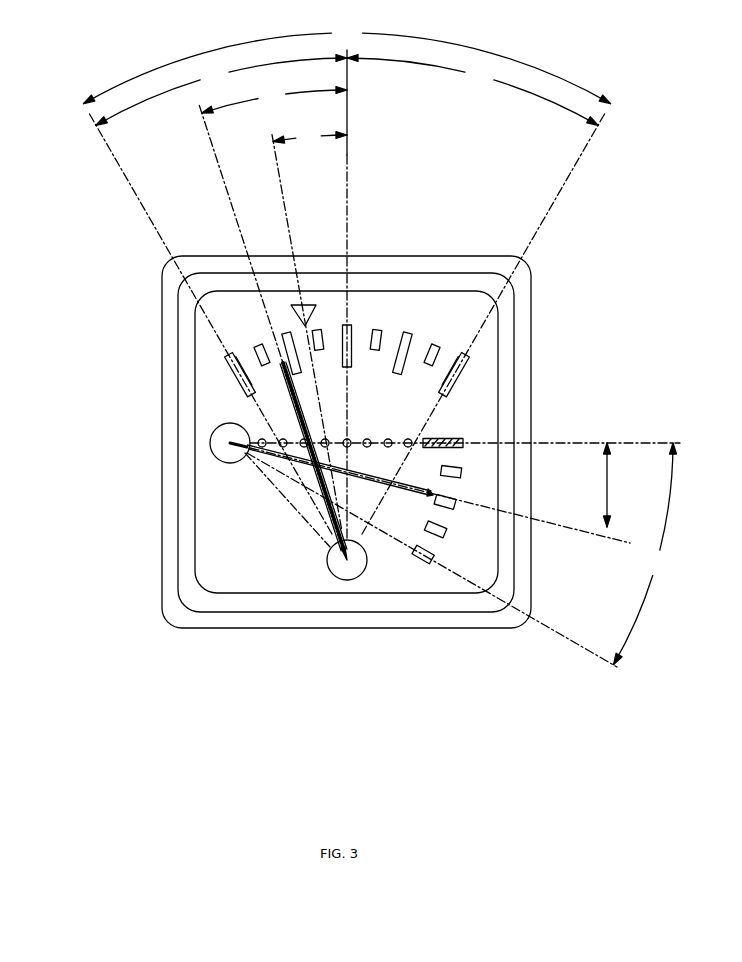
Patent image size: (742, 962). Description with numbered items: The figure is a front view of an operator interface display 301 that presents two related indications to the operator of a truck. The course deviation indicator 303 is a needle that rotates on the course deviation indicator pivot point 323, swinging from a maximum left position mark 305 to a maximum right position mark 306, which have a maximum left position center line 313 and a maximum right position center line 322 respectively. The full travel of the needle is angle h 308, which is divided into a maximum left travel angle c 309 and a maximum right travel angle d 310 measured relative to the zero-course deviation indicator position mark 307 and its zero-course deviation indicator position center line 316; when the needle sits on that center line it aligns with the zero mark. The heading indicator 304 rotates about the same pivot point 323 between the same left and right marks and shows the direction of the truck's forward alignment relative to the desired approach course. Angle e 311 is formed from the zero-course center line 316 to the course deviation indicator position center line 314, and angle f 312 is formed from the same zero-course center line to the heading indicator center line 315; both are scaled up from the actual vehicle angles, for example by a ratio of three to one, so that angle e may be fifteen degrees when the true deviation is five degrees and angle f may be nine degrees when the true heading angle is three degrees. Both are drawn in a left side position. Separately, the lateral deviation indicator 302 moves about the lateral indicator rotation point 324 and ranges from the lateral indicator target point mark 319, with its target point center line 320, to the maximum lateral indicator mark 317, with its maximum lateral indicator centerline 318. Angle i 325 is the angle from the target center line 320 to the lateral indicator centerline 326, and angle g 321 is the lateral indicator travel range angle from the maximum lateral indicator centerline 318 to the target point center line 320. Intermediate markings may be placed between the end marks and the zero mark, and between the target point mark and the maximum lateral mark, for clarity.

The operator interface display 301 is at (547, 771).
The lateral deviation indicator 302 is at (222, 432).
The course deviation indicator 303 is at (347, 572).
The heading indicator 304 is at (304, 305).
The maximum left position mark 305 is at (233, 358).
The maximum right position mark 306 is at (467, 357).
The zero-course deviation indicator position mark 307 is at (352, 322).
The angle h 308 is at (352, 23).
The angle c 309 is at (224, 68).
The angle d 310 is at (488, 76).
The angle e 311 is at (282, 92).
The angle f 312 is at (310, 130).
The maximum left position center line 313 is at (148, 217).
The course deviation indicator position center line 314 is at (220, 182).
The heading indicator center line 315 is at (272, 170).
The zero-course deviation indicator position center line 316 is at (353, 165).
The maximum lateral indicator mark 317 is at (423, 560).
The maximum lateral indicator centerline 318 is at (553, 632).
The lateral indicator target point mark 319 is at (454, 441).
The target point center line 320 is at (598, 442).
The angle g 321 is at (677, 563).
The maximum right position center line 322 is at (552, 218).
The course deviation indicator pivot point 323 is at (330, 565).
The lateral indicator rotation point 324 is at (230, 445).
The angle i 325 is at (613, 480).
The lateral indicator centerline 326 is at (582, 533).